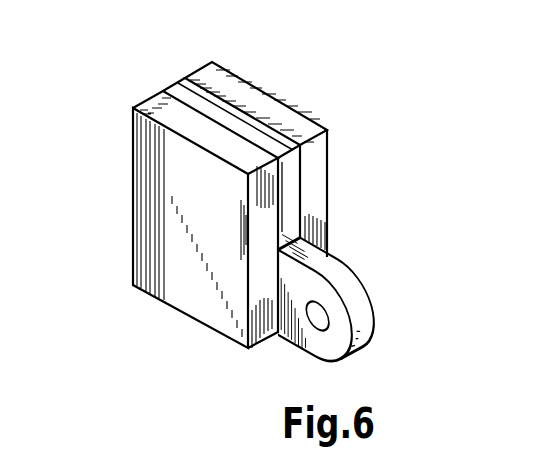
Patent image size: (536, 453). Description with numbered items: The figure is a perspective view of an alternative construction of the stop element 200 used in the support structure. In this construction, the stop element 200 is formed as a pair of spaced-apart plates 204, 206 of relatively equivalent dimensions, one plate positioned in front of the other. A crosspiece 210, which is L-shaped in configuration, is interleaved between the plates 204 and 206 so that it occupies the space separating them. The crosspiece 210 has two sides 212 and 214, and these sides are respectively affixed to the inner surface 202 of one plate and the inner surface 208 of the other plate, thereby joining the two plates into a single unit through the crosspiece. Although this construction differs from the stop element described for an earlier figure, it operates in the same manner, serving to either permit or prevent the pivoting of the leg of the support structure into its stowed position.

The stop element 200 is at (138, 86).
The inner surface 202 is at (279, 182).
The plate 204 is at (167, 183).
The plate 206 is at (273, 108).
The inner surface 208 is at (286, 166).
The crosspiece 210 is at (332, 260).
The side 212 is at (304, 302).
The side 214 is at (364, 278).